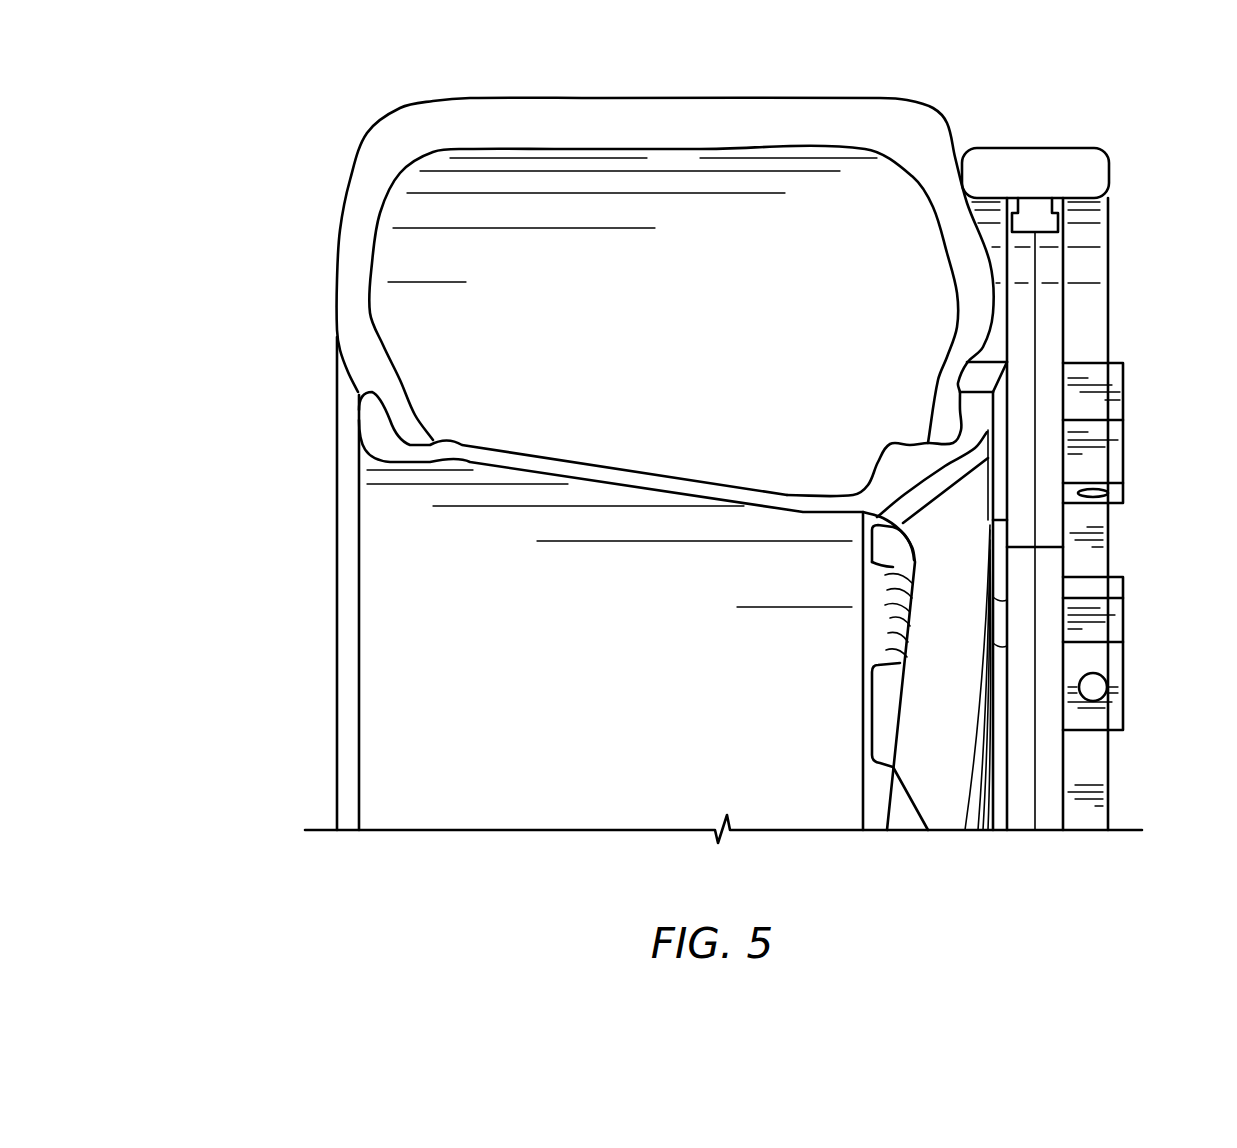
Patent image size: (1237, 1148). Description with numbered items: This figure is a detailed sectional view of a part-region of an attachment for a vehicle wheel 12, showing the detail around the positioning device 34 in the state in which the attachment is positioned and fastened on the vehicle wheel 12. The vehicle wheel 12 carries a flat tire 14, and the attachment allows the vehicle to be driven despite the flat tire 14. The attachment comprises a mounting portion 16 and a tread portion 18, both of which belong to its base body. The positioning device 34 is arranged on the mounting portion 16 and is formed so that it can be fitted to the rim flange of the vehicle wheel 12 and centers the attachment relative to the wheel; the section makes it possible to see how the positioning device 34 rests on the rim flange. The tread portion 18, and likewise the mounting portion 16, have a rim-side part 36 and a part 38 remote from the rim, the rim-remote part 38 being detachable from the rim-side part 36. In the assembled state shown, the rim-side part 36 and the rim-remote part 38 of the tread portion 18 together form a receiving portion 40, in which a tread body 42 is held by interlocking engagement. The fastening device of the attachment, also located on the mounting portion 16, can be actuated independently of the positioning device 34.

The vehicle wheel 12 is at (262, 247).
The flat tire 14 is at (775, 118).
The mounting portion 16 is at (1138, 434).
The tread portion 18 is at (1130, 199).
The positioning device 34 is at (973, 378).
The rim-side part 36 is at (1028, 327).
The part remote from the rim 38 is at (1055, 352).
The receiving portion 40 is at (1085, 220).
The tread body 42 is at (1035, 168).